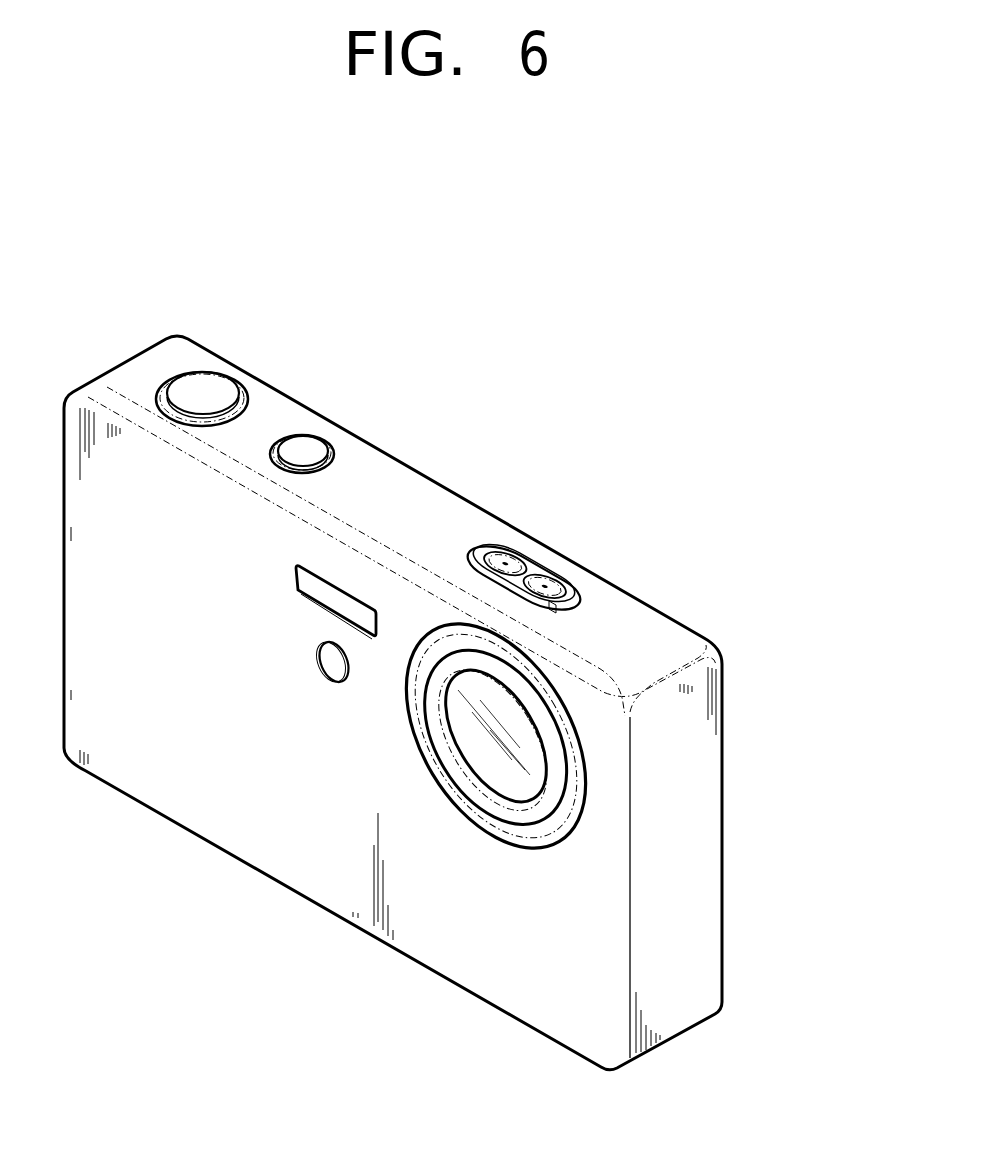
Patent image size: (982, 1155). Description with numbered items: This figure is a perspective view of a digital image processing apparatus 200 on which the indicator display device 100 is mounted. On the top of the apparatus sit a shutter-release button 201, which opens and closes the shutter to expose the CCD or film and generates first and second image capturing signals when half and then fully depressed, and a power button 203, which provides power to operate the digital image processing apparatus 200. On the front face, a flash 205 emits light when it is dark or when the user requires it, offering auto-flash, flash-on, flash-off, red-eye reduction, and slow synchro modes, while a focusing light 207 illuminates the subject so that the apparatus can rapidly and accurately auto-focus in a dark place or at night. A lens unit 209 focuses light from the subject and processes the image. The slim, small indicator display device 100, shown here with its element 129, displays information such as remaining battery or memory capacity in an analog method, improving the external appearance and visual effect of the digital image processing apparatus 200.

The indicator display device 100 is at (598, 570).
The microphone unit 129 is at (522, 552).
The digital image processing apparatus 200 is at (728, 597).
The shutter-release button 201 is at (216, 386).
The power button 203 is at (304, 447).
The flash 205 is at (340, 592).
The focusing light 207 is at (356, 657).
The lens unit 209 is at (556, 803).